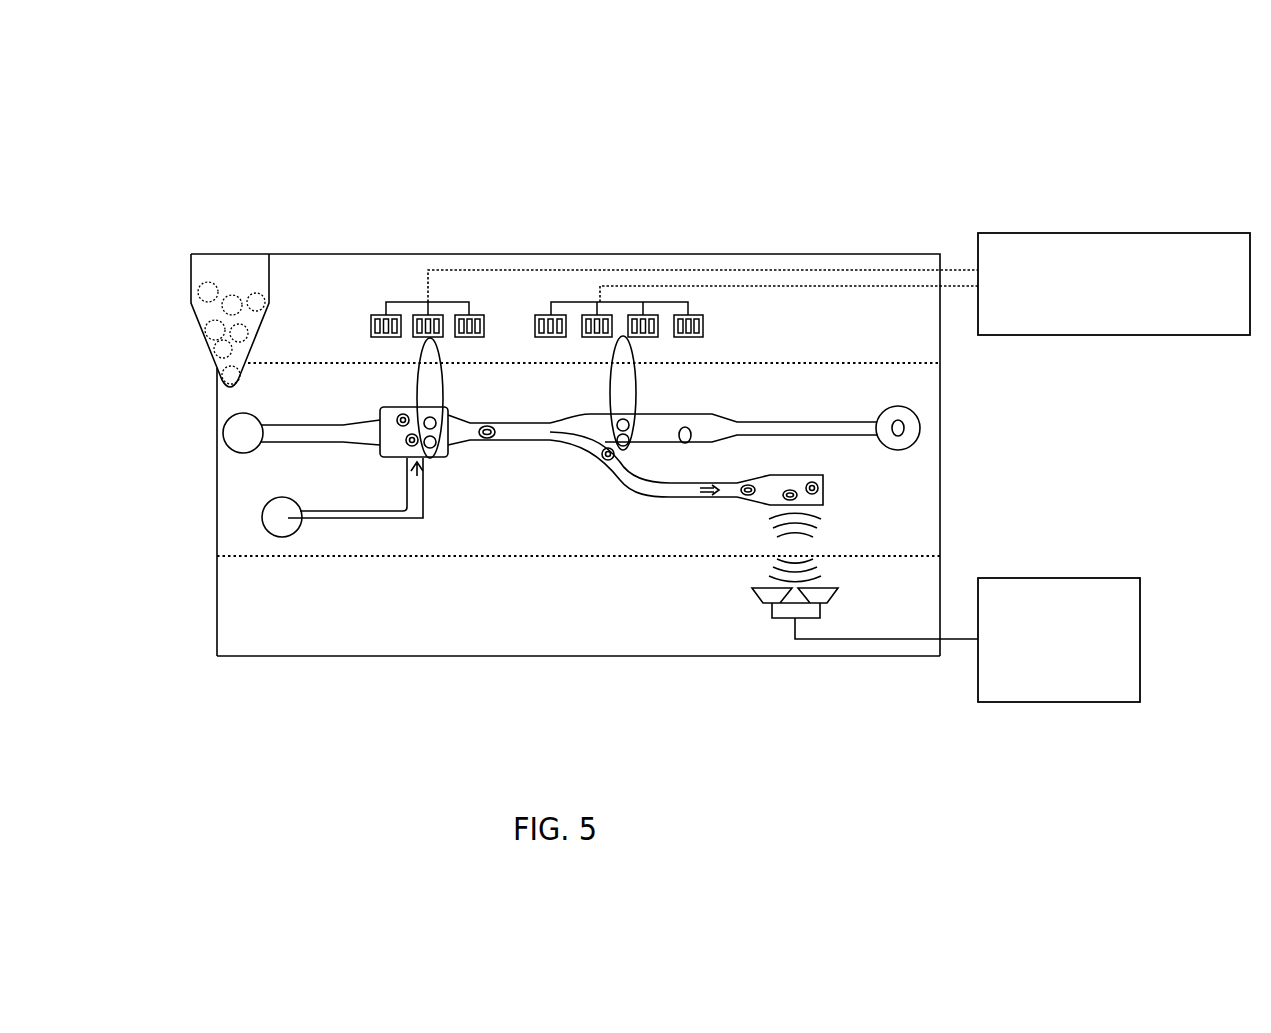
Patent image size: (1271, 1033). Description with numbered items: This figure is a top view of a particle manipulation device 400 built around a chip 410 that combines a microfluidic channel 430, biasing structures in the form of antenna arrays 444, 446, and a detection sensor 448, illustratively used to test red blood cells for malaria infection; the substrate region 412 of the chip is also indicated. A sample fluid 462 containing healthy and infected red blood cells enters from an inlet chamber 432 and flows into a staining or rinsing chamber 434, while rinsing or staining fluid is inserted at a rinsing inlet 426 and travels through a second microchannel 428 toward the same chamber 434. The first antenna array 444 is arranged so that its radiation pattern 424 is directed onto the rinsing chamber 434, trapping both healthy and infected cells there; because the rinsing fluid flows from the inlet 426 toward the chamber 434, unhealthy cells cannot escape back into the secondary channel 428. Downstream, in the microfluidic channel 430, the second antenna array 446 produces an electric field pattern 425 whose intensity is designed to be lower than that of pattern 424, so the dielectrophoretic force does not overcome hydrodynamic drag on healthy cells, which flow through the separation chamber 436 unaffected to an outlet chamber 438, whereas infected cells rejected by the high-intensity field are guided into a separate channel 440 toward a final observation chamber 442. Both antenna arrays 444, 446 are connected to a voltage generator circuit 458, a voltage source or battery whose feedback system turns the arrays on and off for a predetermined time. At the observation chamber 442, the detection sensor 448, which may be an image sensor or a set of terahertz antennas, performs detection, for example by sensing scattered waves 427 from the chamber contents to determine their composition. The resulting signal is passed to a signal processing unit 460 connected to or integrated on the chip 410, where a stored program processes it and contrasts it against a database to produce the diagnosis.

The device 400 is at (575, 108).
The chip 410 is at (187, 385).
The substrate 412 is at (365, 627).
The radiation pattern 424 is at (433, 392).
The electric field pattern 425 is at (620, 392).
The rinsing inlet 426 is at (263, 494).
The scattered waves 427 is at (767, 519).
The second microchannel 428 is at (393, 527).
The microfluidic channel 430 is at (520, 448).
The inlet chamber 432 is at (252, 411).
The rinsing chamber 434 is at (400, 408).
The separation chamber 436 is at (712, 425).
The outlet chamber 438 is at (882, 410).
The separate channel 440 is at (672, 480).
The observation chamber 442 is at (793, 478).
The biasing structures 444 is at (381, 292).
The antenna array 446 is at (707, 320).
The detection sensor 448 is at (757, 603).
The voltage generator circuit 458 is at (1046, 233).
The signal processing unit 460 is at (978, 680).
The sample fluid 462 is at (205, 272).